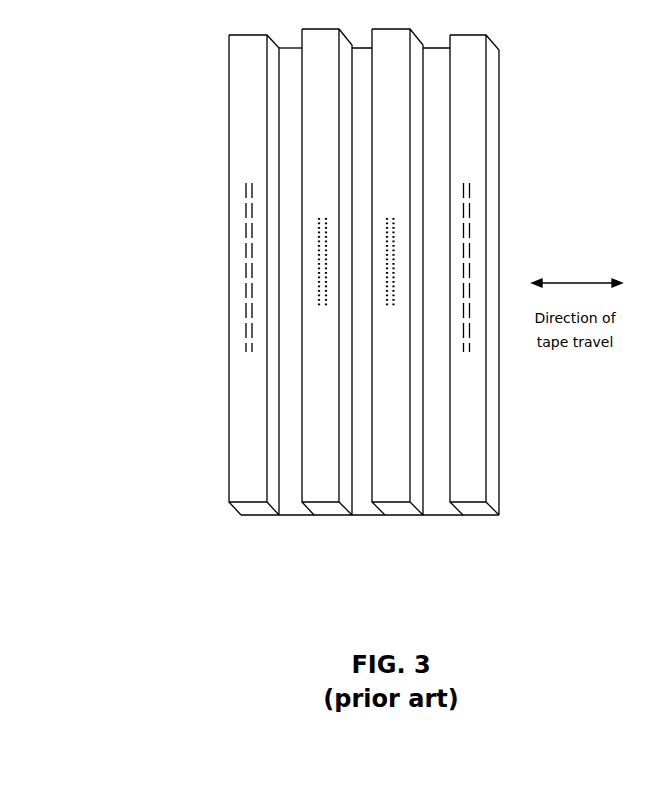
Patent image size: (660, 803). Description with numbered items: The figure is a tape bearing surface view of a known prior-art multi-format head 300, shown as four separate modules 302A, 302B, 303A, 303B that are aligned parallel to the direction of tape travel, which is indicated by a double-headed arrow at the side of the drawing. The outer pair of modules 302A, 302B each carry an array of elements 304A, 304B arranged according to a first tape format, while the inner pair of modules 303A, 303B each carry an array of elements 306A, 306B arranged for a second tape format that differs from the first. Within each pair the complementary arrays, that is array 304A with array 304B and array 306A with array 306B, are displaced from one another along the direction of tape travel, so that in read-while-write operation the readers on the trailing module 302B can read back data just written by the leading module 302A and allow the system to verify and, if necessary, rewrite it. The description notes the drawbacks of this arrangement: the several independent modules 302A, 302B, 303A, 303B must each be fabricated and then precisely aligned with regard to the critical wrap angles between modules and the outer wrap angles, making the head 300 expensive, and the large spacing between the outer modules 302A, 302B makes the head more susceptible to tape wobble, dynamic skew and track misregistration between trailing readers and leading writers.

The multi-format head 300 is at (205, 107).
The outer module 302A is at (252, 507).
The outer module 302B is at (473, 507).
The inner module 303A is at (328, 507).
The inner module 303B is at (400, 507).
The array of elements 304A is at (229, 241).
The array of elements 304B is at (490, 205).
The array of elements 306A is at (304, 293).
The array of elements 306B is at (407, 310).